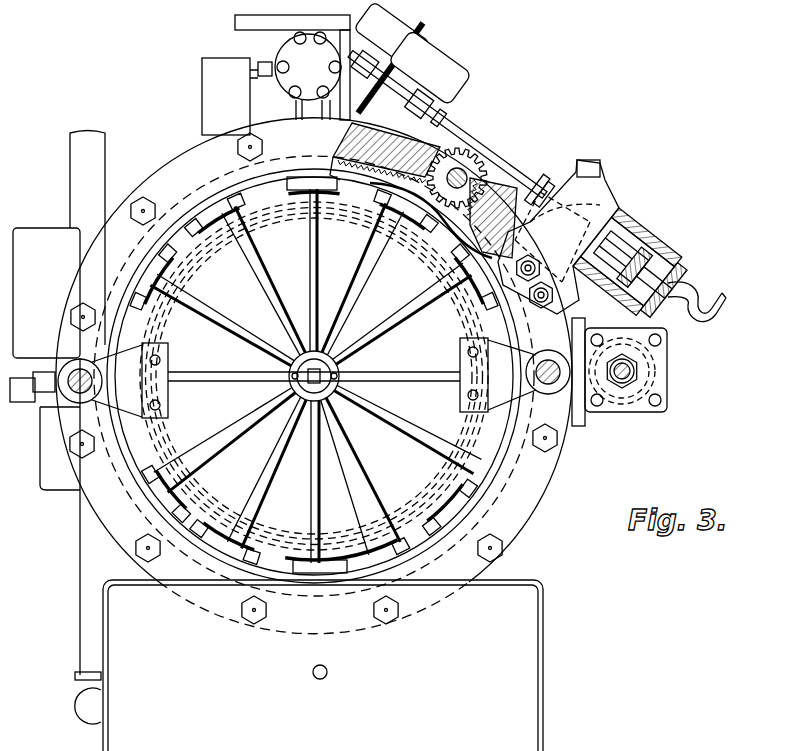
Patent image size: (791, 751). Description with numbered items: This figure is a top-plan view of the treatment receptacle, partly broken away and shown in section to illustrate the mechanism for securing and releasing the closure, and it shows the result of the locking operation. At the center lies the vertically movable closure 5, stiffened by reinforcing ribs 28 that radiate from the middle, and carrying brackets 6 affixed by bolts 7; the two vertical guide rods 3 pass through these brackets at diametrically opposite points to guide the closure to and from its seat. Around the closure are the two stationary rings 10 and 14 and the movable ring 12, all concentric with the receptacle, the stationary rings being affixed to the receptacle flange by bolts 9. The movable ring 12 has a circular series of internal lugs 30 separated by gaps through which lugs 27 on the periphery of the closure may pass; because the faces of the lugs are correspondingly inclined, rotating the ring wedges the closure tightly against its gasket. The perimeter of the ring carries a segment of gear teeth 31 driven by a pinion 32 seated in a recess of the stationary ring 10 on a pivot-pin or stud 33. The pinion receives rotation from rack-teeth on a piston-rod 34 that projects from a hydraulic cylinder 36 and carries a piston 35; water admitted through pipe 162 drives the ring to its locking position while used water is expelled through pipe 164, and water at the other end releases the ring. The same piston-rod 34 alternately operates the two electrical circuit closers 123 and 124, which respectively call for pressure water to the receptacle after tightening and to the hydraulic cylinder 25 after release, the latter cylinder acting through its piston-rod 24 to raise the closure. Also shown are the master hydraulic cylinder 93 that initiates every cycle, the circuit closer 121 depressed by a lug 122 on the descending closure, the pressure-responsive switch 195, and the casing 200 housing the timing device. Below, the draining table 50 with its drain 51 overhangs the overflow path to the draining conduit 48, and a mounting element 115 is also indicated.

The vertical guide rods 3 is at (84, 393).
The closure 5 is at (320, 352).
The brackets 6 is at (163, 404).
The bolts 7 is at (163, 359).
The bolts 9 is at (143, 197).
The stationary ring 10 is at (385, 140).
The movable ring 12 is at (380, 185).
The stationary ring 14 is at (100, 492).
The piston-rod 24 is at (640, 377).
The hydraulic cylinder 25 is at (663, 362).
The lugs 27 is at (473, 267).
The reinforcing ribs 28 is at (220, 326).
The internal lugs 30 is at (237, 213).
The segment of gear teeth 31 is at (428, 190).
The pinion 32 is at (462, 128).
The pivot-pin or stud 33 is at (466, 172).
The piston-rod 34 is at (500, 157).
The piston 35 is at (650, 247).
The hydraulic cylinder 36 is at (612, 215).
The conduit 48 is at (78, 707).
The draining table 50 is at (523, 657).
The drain 51 is at (318, 678).
The hydraulic cylinder 93 is at (298, 80).
The bracket bar 115 is at (264, 30).
The circuit closer 121 is at (20, 402).
The lug 122 is at (43, 372).
The electrical circuit closer 123 is at (400, 35).
The electrical circuit closer 124 is at (437, 66).
The pipe 162 is at (598, 165).
The pipe 164 is at (708, 286).
The pressure-responsive switch 195 is at (42, 474).
The casing 200 is at (37, 243).